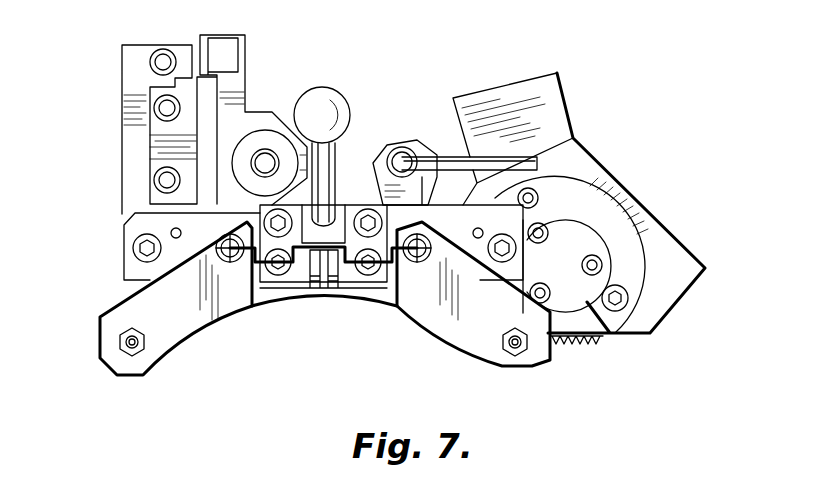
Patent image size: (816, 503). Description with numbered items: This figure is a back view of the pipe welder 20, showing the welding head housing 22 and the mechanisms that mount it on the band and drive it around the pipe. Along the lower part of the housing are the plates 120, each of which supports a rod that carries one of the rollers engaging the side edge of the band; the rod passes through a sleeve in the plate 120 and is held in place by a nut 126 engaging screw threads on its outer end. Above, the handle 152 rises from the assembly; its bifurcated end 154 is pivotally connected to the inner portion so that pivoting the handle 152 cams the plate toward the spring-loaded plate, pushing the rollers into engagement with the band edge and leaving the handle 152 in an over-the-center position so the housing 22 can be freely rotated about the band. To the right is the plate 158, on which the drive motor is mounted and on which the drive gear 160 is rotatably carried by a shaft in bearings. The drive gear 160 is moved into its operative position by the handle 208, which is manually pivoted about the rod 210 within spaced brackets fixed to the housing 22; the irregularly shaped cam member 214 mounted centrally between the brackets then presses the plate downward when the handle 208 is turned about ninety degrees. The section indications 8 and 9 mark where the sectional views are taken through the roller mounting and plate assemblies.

The pipe welder 20 is at (628, 100).
The welding head housing 22 is at (162, 232).
The plate 120 is at (215, 312).
The nut 126 is at (143, 352).
The handle 152 is at (320, 135).
The bifurcated end 154 is at (305, 287).
The plate 158 is at (668, 265).
The drive gear 160 is at (575, 347).
The handle 208 is at (537, 164).
The rod 210 is at (402, 147).
The irregularly shaped cam member 214 is at (424, 141).
The section line 8- 8 is at (193, 303).
The section line 9- 9 is at (113, 248).